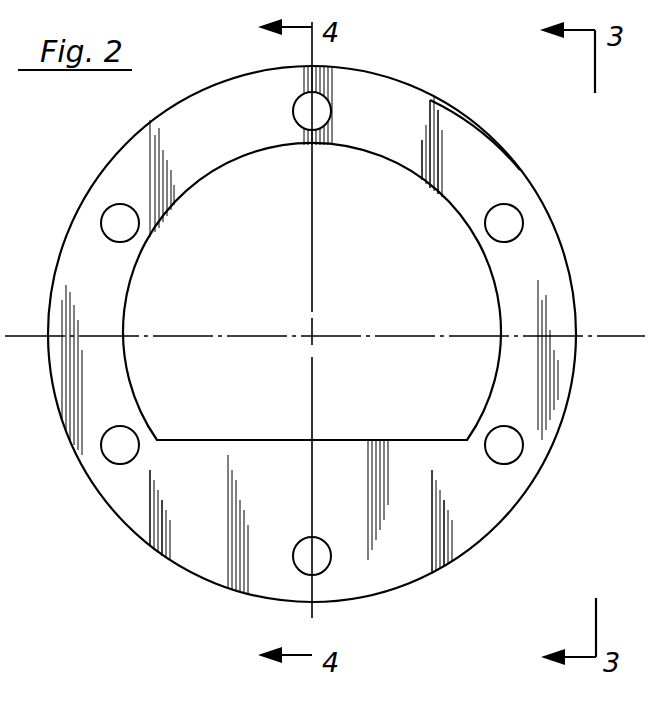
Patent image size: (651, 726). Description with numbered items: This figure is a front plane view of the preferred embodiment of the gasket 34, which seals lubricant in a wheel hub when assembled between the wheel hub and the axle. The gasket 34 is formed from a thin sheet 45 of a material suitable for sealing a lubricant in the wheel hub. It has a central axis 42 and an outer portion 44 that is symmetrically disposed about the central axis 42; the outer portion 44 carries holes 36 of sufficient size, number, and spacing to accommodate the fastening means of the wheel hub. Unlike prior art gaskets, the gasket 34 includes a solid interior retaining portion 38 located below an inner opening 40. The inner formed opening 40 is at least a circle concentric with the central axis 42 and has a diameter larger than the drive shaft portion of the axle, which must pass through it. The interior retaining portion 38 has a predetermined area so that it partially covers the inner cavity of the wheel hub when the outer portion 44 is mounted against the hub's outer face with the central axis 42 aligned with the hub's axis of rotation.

The gasket 34 is at (183, 598).
The holes 36 is at (508, 222).
The solid interior retaining portion 38 is at (355, 480).
The inner opening 40 is at (452, 372).
The central axis 42 is at (313, 333).
The outer portion 44 is at (388, 116).
The thin sheet 45 is at (483, 170).